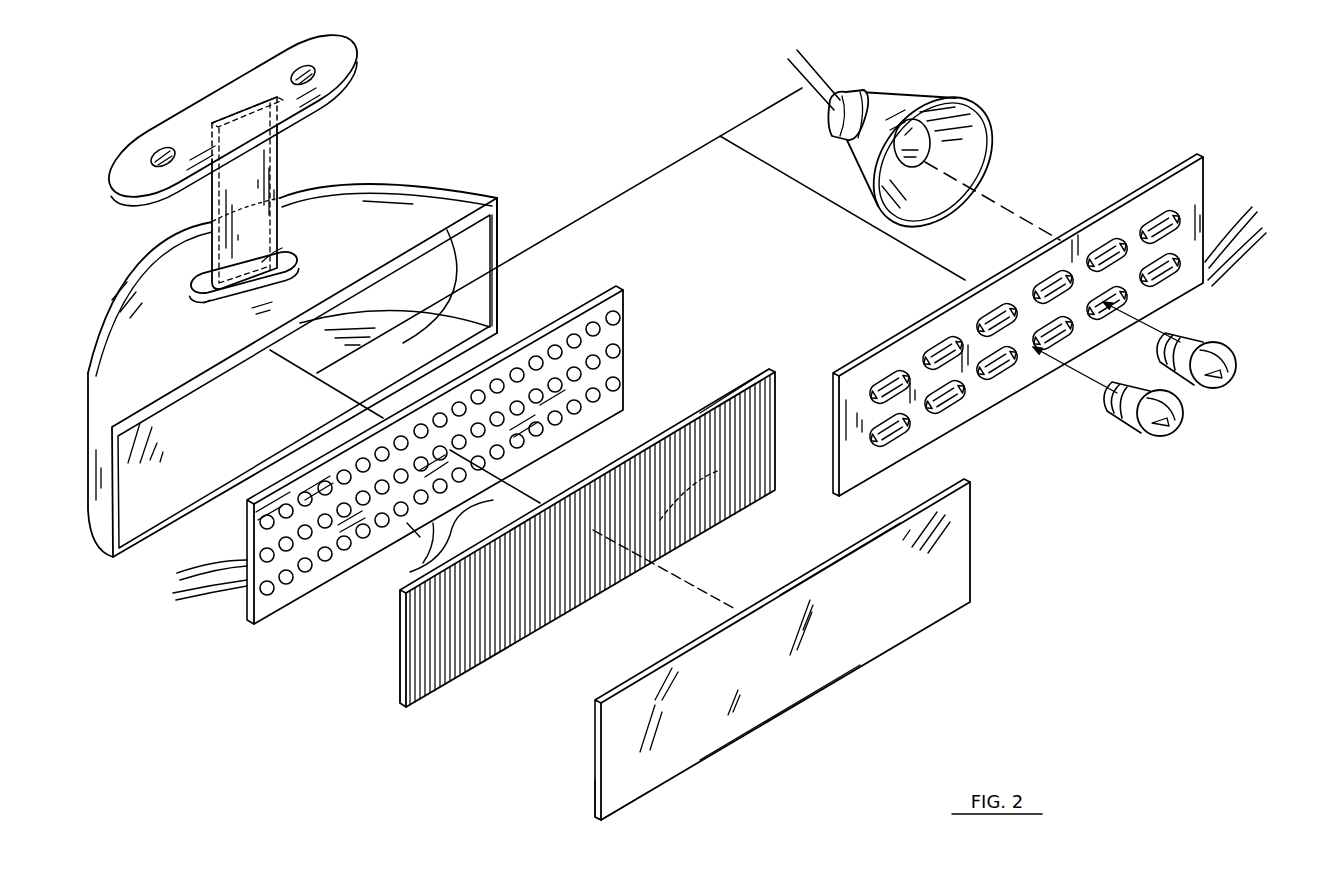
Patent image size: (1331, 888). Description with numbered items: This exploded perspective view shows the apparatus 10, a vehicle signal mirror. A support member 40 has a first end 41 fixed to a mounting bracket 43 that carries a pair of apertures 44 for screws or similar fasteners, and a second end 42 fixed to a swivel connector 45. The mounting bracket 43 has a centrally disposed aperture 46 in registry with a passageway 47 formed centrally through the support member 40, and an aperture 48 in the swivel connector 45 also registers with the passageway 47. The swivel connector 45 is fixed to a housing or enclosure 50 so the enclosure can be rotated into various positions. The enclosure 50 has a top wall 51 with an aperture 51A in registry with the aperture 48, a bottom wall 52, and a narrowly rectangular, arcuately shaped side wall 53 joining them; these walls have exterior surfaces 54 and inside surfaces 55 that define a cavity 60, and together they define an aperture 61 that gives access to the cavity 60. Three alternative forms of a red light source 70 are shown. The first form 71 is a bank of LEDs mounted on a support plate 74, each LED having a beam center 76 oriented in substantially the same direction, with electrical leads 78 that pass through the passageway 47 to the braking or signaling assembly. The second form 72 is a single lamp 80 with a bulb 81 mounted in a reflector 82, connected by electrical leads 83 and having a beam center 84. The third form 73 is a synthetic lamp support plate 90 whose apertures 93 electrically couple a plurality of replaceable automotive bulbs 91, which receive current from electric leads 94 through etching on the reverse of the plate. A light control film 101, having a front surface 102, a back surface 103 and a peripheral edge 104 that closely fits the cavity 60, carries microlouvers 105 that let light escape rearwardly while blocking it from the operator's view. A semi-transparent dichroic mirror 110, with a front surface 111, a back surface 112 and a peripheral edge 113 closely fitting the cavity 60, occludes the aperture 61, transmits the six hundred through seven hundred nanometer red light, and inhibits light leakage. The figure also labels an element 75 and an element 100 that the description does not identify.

The apparatus 10 is at (413, 130).
The support member 40 is at (213, 235).
The first end 41 is at (282, 123).
The second end 42 is at (207, 277).
The mounting bracket 43 is at (173, 122).
The apertures 44 is at (301, 68).
The swivel connector 45 is at (290, 262).
The centrally disposed aperture 46 is at (257, 96).
The passageway 47 is at (278, 175).
The aperture 48 is at (206, 306).
The housing or enclosure 50 is at (127, 337).
The top wall 51 is at (401, 223).
The aperture 51A is at (268, 260).
The bottom wall 52 is at (184, 458).
The side wall 53 is at (88, 468).
The exterior surfaces 54 is at (140, 264).
The inside surfaces 55 is at (466, 270).
The cavity 60 is at (318, 408).
The aperture 61 is at (488, 227).
The light source 70 is at (878, 85).
The first form of the light source 71 is at (613, 362).
The second form of the light source 72 is at (907, 90).
The third form of the light source 73 is at (1197, 315).
The support plate 74 is at (564, 330).
The lead wires 75 is at (500, 420).
The beam center 76 is at (404, 528).
The electrical leads 78 is at (218, 581).
The lamp 80 is at (860, 150).
The bulb or lamp 81 is at (922, 147).
The reflector 82 is at (975, 100).
The electrical leads 83 is at (807, 57).
The beam center 84 is at (1003, 200).
The lamp support plate 90 is at (1205, 172).
The automotive bulbs or lamps 91 is at (1237, 368).
The apertures 93 is at (1150, 220).
The electric leads 94 is at (1250, 250).
The light diffusing grating 100 is at (480, 672).
The light control film 101 is at (580, 587).
The front surface 102 is at (420, 660).
The back surface 103 is at (400, 628).
The peripheral edge 104 is at (748, 388).
The microlouvers 105 is at (718, 496).
The semi-transparent mirror 110 is at (945, 578).
The front surface 111 is at (840, 647).
The back surface 112 is at (840, 553).
The peripheral edge 113 is at (627, 803).